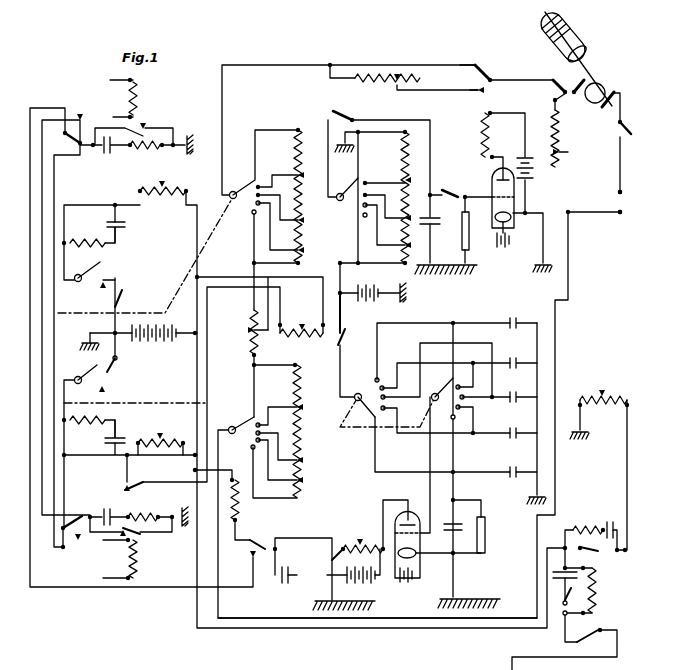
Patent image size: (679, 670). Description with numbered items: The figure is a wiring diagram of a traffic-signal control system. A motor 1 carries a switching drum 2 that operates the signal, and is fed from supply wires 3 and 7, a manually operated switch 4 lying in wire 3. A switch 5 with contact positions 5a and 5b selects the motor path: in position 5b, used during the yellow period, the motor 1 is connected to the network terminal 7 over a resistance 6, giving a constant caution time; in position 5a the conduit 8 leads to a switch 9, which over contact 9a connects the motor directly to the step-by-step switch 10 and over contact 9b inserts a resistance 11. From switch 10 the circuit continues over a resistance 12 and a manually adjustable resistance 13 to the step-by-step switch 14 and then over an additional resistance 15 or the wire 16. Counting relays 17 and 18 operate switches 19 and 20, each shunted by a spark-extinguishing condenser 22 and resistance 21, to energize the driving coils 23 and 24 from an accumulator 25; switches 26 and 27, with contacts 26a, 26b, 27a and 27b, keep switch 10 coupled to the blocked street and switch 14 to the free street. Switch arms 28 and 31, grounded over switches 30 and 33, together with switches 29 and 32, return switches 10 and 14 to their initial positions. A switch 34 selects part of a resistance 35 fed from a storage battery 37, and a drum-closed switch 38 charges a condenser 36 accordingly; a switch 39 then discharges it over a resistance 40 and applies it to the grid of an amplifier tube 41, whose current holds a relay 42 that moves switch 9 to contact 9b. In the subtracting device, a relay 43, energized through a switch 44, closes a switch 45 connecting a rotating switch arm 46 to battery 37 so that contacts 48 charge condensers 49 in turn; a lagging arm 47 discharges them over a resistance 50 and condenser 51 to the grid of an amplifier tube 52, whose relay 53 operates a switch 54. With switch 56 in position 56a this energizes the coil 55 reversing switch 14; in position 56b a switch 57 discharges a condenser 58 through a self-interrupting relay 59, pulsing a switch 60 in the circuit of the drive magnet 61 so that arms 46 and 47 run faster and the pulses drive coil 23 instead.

The motor 1 is at (600, 82).
The switching drum 2 is at (588, 38).
The wire 3 is at (626, 192).
The manually operated switch 4 is at (630, 129).
The switch 5 is at (558, 90).
The contact position 5a is at (573, 79).
The contact position 5b is at (566, 105).
The resistance 6 is at (563, 133).
The network terminal 7 is at (627, 213).
The conduit 8 is at (520, 80).
The switch 9 is at (486, 82).
The contact 9a is at (469, 56).
The contact 9b is at (469, 96).
The step-by-step switch 10 is at (261, 190).
The resistance 11 is at (374, 75).
The resistance 12 is at (300, 180).
The manually adjustable resistance 13 is at (249, 338).
The step-by-step switch 14 is at (257, 452).
The additional resistance 15 is at (300, 432).
The wire 16 is at (400, 618).
The relay 17 is at (145, 90).
The relay 18 is at (143, 562).
The switch 19 is at (140, 124).
The switch 20 is at (145, 536).
The resistance 21 is at (159, 330).
The condenser 22 is at (117, 331).
The driving coil 23 is at (165, 185).
The driving coil 24 is at (160, 433).
The accumulator 25 is at (182, 315).
The switch 26 is at (60, 130).
The contact 26a is at (89, 158).
The contact 26b is at (90, 108).
The switch 27 is at (64, 560).
The contact 27a is at (78, 513).
The contact 27b is at (80, 545).
The switch arm 28 is at (103, 272).
The switch 29 is at (97, 233).
The switch 30 is at (148, 288).
The switch arm 31 is at (98, 382).
The switch 32 is at (97, 431).
The switch 33 is at (143, 350).
The switch 34 is at (369, 211).
The resistance 35 is at (394, 197).
The condenser 36 is at (438, 208).
The storage battery 37 is at (372, 285).
The switch 38 is at (380, 97).
The switch 39 is at (457, 165).
The resistance 40 is at (462, 230).
The amplifier tube 41 is at (490, 188).
The relay 42 is at (484, 136).
The relay 43 is at (301, 325).
The switch 44 is at (156, 464).
The switch 45 is at (351, 324).
The switch arm 46 is at (426, 388).
The switch arm 47 is at (440, 388).
The contacts 48 is at (378, 377).
The condensers 49 is at (520, 460).
The resistance 50 is at (486, 535).
The condenser 51 is at (458, 523).
The amplifier tube 52 is at (412, 512).
The relay 53 is at (364, 556).
The switch 54 is at (324, 552).
The coil 55 is at (252, 500).
The switch 56 is at (246, 543).
The position 56a is at (282, 529).
The position 56b is at (272, 578).
The switch 57 is at (560, 590).
The condenser 58 is at (562, 564).
The self-interrupting relay 59 is at (598, 585).
The switch 60 is at (600, 553).
The drive magnet 61 is at (603, 391).